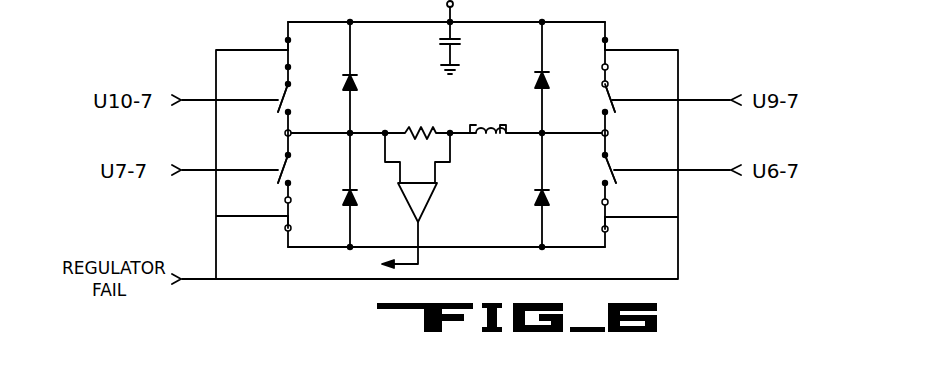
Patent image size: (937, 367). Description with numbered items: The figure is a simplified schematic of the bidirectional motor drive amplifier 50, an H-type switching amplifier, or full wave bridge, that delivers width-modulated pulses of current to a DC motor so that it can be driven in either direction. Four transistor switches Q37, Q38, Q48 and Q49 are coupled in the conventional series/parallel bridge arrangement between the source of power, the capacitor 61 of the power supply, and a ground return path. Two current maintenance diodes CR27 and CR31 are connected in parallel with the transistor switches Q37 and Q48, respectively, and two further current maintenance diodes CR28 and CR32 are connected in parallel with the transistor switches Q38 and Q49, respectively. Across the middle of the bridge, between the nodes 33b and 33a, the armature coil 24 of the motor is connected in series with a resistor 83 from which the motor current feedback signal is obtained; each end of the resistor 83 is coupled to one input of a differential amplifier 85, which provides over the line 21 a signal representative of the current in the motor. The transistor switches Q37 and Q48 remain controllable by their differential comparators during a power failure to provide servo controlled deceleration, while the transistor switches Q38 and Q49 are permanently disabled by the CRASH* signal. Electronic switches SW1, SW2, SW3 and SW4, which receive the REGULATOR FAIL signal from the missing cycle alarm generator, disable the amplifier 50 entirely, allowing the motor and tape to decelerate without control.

The bidirectional motor drive amplifier 50 is at (686, 38).
The capacitor 61 is at (462, 46).
The resistor 83 is at (418, 128).
The armature coil 24 is at (479, 122).
The differential amplifier 85 is at (437, 205).
The line 21 is at (397, 257).
The node 33a is at (609, 133).
The node 33b is at (284, 133).
The current maintenance diode CR32 is at (380, 77).
The current maintenance diode CR31 is at (376, 190).
The current maintenance diode CR28 is at (568, 77).
The current maintenance diode CR27 is at (568, 190).
The transistor switch Q49 is at (307, 100).
The transistor switch Q48 is at (307, 170).
The transistor switch Q38 is at (585, 102).
The transistor switch Q37 is at (589, 170).
The electronic switch SW4 is at (258, 42).
The electronic switch SW3 is at (259, 229).
The electronic switch SW1 is at (631, 44).
The electronic switch SW2 is at (631, 231).